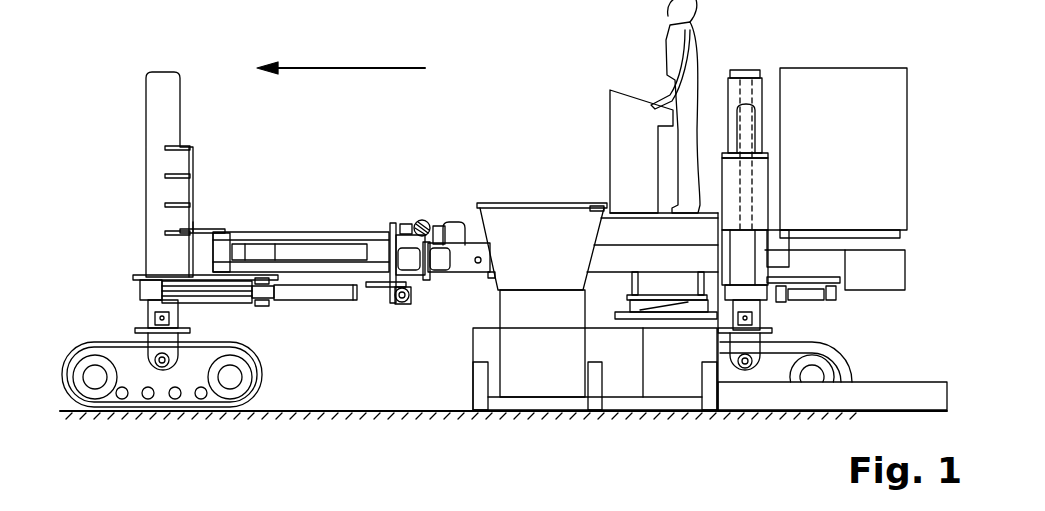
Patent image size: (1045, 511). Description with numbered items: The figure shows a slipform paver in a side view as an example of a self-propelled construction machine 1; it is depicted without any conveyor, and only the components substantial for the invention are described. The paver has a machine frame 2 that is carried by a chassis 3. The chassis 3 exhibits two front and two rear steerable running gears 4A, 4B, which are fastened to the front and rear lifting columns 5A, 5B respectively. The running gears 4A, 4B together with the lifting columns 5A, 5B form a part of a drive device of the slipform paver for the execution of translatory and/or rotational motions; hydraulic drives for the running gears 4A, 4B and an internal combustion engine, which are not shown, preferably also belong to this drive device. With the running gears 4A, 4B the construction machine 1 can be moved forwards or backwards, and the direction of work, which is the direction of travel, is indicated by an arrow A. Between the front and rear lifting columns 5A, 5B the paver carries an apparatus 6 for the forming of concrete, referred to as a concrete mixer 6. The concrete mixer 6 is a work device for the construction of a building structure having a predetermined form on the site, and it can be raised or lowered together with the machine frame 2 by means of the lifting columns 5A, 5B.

The self-propelled construction machine 1 is at (478, 85).
The machine frame 2 is at (708, 204).
The chassis 3 is at (80, 326).
The front steerable running gear 4A is at (263, 377).
The rear steerable running gear 4B is at (849, 380).
The front lifting column 5A is at (145, 127).
The rear lifting column 5B is at (763, 108).
The concrete mixer 6 is at (538, 226).
The arrow A is at (343, 68).